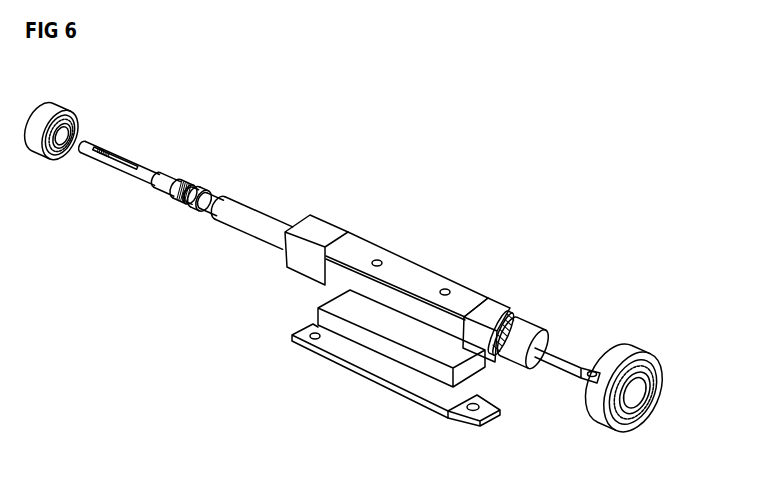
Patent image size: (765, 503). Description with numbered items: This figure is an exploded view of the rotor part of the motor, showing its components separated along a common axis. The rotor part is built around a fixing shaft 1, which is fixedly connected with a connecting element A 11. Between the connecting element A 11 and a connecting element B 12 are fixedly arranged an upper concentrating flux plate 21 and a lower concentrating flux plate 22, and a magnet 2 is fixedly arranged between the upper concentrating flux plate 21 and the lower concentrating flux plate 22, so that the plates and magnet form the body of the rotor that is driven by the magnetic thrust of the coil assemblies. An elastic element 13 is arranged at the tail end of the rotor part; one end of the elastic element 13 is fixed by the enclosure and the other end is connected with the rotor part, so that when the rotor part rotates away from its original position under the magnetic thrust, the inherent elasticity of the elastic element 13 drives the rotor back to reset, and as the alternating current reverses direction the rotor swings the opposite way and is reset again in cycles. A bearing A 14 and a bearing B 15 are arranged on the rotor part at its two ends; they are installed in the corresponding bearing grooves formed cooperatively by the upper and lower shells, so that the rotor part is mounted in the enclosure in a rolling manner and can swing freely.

The fixing shaft 1 is at (260, 223).
The magnet 2 is at (368, 313).
The connecting element A 11 is at (322, 230).
The connecting element B 12 is at (495, 317).
The elastic element 13 is at (570, 361).
The bearing A 14 is at (45, 113).
The bearing B 15 is at (628, 360).
The upper concentrating flux plate 21 is at (418, 277).
The lower concentrating flux plate 22 is at (440, 390).